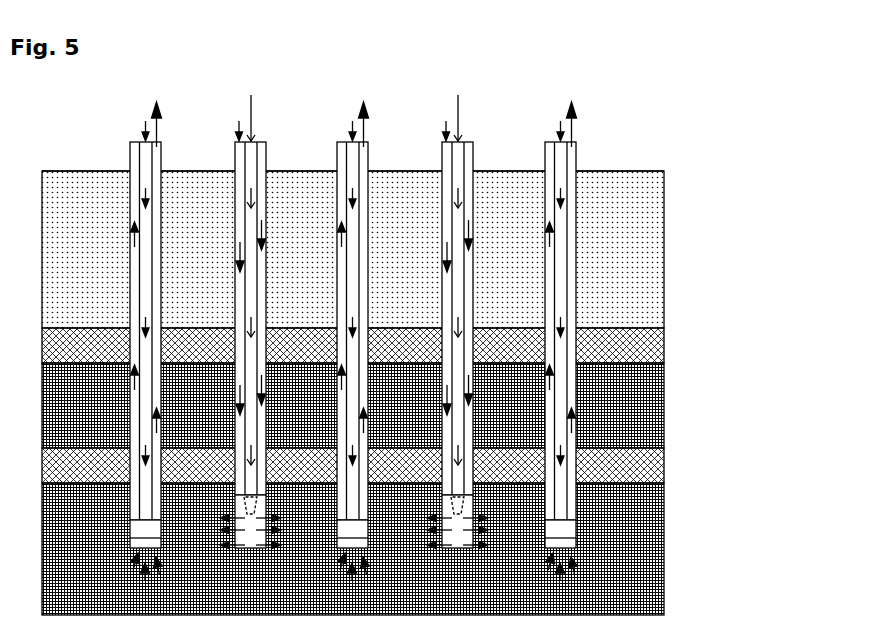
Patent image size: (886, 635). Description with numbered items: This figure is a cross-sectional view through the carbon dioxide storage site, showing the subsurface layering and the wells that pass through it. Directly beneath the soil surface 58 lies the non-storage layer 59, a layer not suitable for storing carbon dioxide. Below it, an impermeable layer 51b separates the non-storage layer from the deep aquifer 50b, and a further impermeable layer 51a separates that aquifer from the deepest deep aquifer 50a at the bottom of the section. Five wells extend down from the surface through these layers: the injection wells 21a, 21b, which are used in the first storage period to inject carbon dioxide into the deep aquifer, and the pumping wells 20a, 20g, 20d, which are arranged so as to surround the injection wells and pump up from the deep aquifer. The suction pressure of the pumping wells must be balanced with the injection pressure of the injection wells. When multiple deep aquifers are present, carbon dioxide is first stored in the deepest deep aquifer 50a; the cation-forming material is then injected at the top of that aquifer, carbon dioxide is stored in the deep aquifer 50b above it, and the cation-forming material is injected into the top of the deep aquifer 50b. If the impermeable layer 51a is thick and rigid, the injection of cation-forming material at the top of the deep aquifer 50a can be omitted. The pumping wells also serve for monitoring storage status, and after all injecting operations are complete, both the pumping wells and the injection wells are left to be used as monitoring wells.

The pumping well 20a is at (130, 163).
The injection well 21a is at (235, 165).
The pumping well 20g is at (337, 163).
The injection well 21b is at (442, 163).
The pumping well 20d is at (545, 162).
The soil surface 58 is at (640, 171).
The non-storage layer 59 is at (665, 224).
The impermeable layer 51b is at (665, 352).
The deep aquifer 50b is at (665, 412).
The impermeable layer 51a is at (665, 471).
The deep aquifer 50a is at (665, 577).